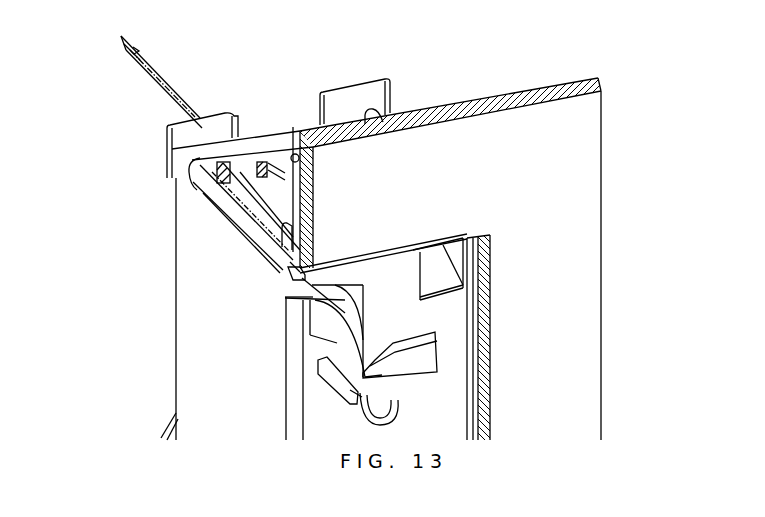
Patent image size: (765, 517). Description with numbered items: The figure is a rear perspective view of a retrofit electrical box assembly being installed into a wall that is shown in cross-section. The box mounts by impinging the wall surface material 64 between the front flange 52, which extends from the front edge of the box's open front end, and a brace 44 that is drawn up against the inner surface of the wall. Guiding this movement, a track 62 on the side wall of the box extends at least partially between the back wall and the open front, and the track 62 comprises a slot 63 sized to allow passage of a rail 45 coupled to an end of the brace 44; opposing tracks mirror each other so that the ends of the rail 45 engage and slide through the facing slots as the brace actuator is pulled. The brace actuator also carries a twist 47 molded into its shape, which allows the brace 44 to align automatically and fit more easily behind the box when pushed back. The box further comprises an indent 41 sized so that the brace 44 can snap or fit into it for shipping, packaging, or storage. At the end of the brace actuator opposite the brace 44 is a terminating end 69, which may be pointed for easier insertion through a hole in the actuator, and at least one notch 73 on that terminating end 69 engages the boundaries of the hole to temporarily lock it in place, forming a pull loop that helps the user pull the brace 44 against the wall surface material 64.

The indent 41 is at (365, 308).
The brace 44 is at (367, 377).
The rail 45 is at (323, 374).
The twist 47 is at (295, 193).
The flange 52 is at (223, 132).
The track 62 is at (233, 202).
The slot 63 is at (293, 277).
The wall surface material 64 is at (573, 228).
The terminating end 69 is at (125, 49).
The notch 73 is at (135, 70).